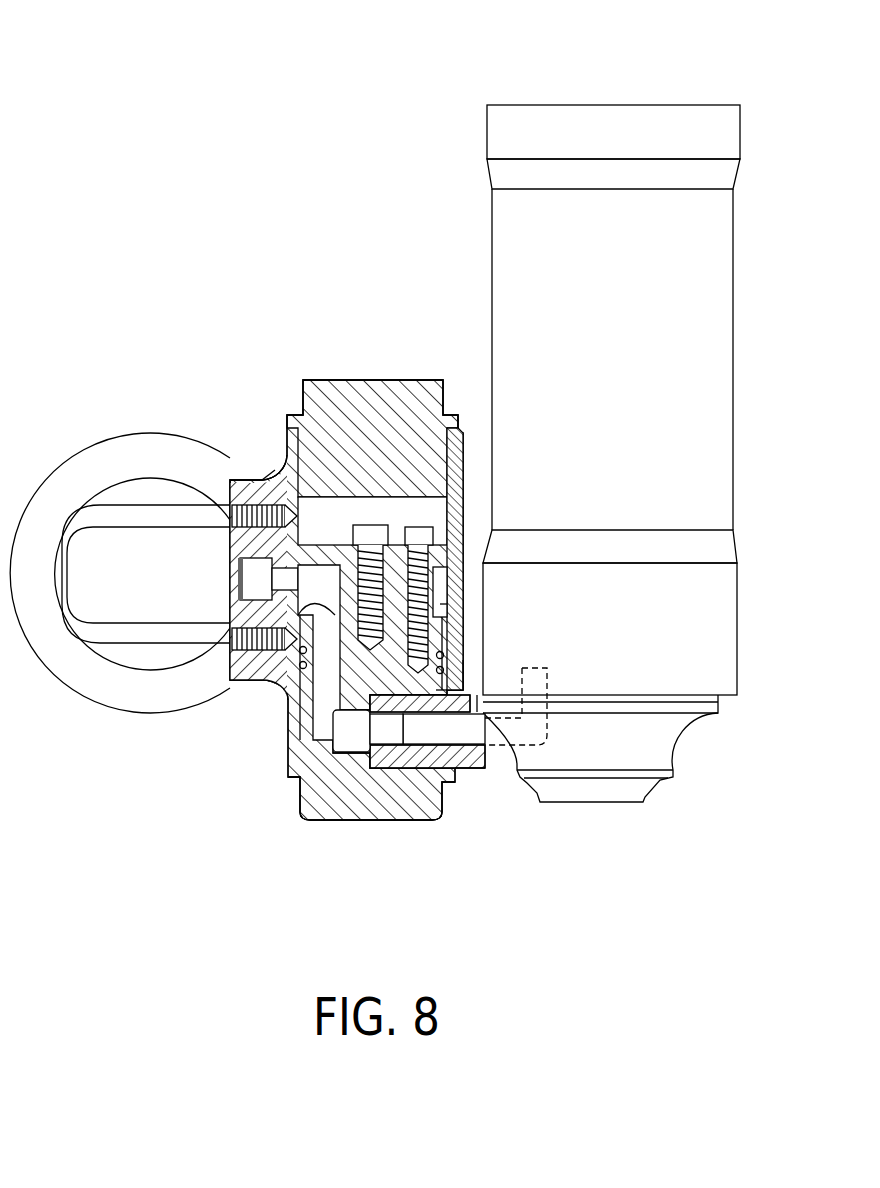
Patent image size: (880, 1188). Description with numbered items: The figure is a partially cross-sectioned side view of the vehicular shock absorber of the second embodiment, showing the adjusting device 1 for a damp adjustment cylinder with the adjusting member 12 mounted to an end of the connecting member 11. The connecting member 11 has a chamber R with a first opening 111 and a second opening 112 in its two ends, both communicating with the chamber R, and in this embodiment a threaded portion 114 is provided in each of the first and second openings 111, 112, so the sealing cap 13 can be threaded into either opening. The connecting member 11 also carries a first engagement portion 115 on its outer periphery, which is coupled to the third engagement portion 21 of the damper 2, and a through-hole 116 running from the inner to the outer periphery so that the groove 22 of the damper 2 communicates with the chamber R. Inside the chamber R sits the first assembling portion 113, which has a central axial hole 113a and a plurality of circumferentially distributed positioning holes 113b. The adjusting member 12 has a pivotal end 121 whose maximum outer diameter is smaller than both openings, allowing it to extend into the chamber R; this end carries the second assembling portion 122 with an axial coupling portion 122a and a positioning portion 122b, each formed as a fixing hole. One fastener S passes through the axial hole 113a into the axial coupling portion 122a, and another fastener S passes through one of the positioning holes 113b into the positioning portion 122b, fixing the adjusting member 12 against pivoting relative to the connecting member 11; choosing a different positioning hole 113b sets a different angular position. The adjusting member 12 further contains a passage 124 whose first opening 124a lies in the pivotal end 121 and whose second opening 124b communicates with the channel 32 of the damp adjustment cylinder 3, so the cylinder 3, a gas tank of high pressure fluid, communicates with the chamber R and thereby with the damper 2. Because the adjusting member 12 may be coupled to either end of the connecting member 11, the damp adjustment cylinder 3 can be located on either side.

The adjusting device 1 is at (238, 322).
The damper 2 is at (83, 470).
The damp adjustment cylinder 3 is at (598, 118).
The connecting member 11 is at (258, 617).
The adjusting member 12 is at (376, 806).
The sealing cap 13 is at (302, 380).
The third engagement portion 21 is at (245, 665).
The groove 22 is at (238, 563).
The channel 32 is at (392, 750).
The first opening 111 is at (436, 692).
The second opening 112 is at (424, 497).
The first assembling portion 113 is at (369, 460).
The axial hole 113a is at (360, 568).
The positioning holes 113b is at (398, 527).
The threaded portion 114 is at (315, 475).
The first engagement portion 115 is at (250, 475).
The through-hole 116 is at (256, 565).
The pivotal end 121 is at (440, 604).
The second assembling portion 122 is at (476, 801).
The axial coupling portion 122a is at (465, 680).
The positioning portion 122b is at (458, 660).
The passage 124 is at (295, 747).
The first opening of the passage 124a is at (290, 700).
The second opening of the passage 124b is at (352, 757).
The fastener S is at (462, 522).
The chamber R is at (437, 583).